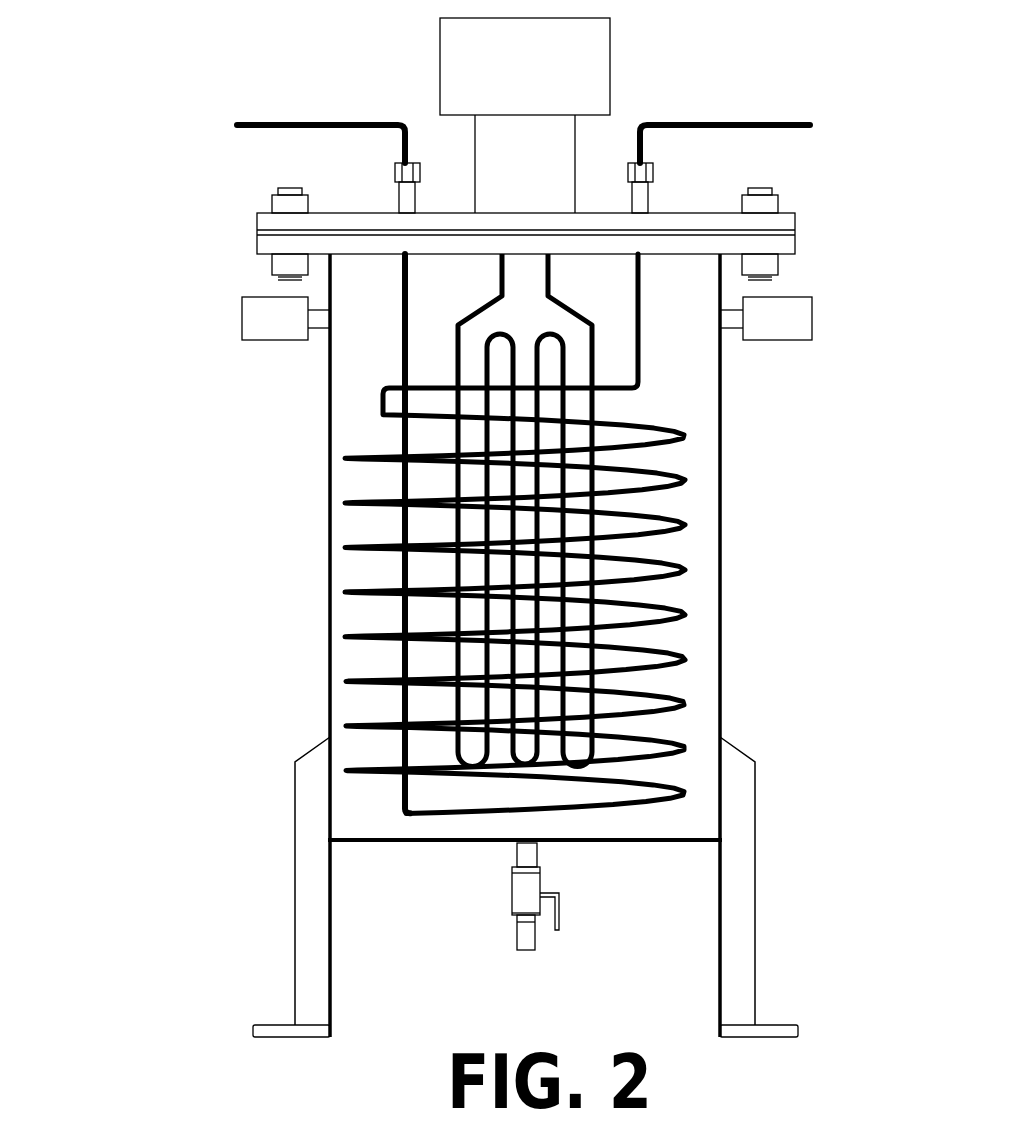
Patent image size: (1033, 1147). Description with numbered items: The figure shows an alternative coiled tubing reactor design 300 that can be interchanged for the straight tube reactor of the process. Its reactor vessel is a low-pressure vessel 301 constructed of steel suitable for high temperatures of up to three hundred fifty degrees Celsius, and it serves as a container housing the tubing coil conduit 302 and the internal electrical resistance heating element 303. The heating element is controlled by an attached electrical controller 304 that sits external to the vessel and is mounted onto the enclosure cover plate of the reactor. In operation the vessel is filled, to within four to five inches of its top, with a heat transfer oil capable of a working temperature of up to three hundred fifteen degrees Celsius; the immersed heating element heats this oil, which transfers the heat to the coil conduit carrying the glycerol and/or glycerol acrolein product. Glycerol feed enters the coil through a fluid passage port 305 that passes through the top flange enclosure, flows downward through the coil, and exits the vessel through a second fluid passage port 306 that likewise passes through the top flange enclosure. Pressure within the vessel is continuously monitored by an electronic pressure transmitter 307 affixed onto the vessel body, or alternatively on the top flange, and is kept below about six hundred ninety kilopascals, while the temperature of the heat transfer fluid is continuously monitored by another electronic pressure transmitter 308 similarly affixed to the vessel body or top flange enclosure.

The coiled tubing reactor design 300 is at (158, 148).
The low-pressure vessel 301 is at (722, 598).
The tubing coil conduit 302 is at (683, 477).
The internal electrical resistance heating element 303 is at (455, 355).
The electrical controller 304 is at (612, 78).
The fluid passage port 305 is at (325, 115).
The fluid passage port 306 is at (745, 117).
The electronic pressure transmitter 307 is at (240, 310).
The electronic pressure transmitter 308 is at (812, 312).